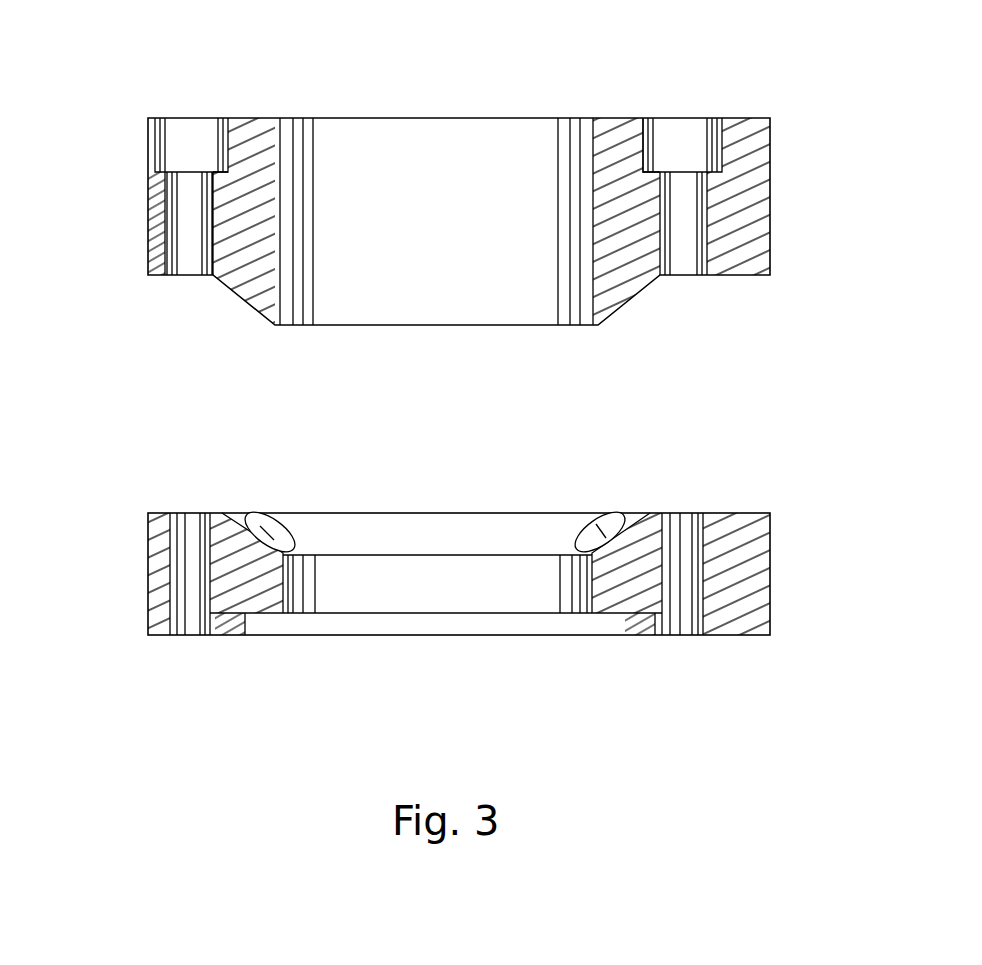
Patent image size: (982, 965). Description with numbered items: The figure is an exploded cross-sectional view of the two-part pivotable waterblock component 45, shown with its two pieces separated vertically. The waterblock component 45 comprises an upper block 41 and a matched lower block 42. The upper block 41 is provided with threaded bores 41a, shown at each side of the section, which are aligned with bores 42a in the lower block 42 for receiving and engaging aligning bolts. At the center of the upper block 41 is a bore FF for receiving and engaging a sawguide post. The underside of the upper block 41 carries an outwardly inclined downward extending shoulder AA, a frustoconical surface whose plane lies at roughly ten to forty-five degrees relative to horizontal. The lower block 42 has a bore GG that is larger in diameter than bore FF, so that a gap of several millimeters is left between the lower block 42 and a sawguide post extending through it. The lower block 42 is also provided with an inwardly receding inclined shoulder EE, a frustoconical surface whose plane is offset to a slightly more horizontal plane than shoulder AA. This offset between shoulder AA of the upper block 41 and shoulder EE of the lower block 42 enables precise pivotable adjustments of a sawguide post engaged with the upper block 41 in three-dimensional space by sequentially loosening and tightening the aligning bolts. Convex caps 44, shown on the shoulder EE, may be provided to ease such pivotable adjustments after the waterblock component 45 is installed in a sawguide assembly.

The upper block 41 is at (617, 140).
The threaded bores 41a is at (188, 232).
The lower block 42 is at (770, 568).
The bores 42a is at (190, 600).
The convex caps 44 is at (287, 530).
The waterblock component 45 is at (110, 52).
The bore FF is at (425, 158).
The outwardly inclined downward extending shoulder AA is at (624, 332).
The inwardly receding inclined shoulder EE is at (447, 524).
The bore GG is at (425, 604).